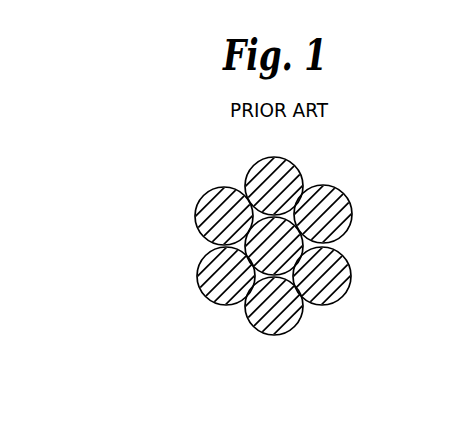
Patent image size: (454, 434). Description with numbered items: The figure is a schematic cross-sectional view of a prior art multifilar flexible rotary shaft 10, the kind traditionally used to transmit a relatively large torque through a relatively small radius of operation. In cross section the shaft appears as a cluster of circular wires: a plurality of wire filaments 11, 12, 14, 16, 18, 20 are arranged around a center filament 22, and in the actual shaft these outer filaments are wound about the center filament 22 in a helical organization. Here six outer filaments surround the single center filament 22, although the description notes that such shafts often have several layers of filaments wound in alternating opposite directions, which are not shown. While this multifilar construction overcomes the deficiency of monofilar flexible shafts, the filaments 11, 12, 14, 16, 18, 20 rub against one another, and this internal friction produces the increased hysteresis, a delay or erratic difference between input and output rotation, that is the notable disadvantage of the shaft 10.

The multifilar flexible shaft 10 is at (145, 243).
The wire filament 11 is at (295, 325).
The wire filament 12 is at (342, 282).
The wire filament 14 is at (343, 208).
The wire filament 16 is at (296, 166).
The wire filament 18 is at (207, 192).
The wire filament 20 is at (199, 283).
The center filament 22 is at (302, 260).